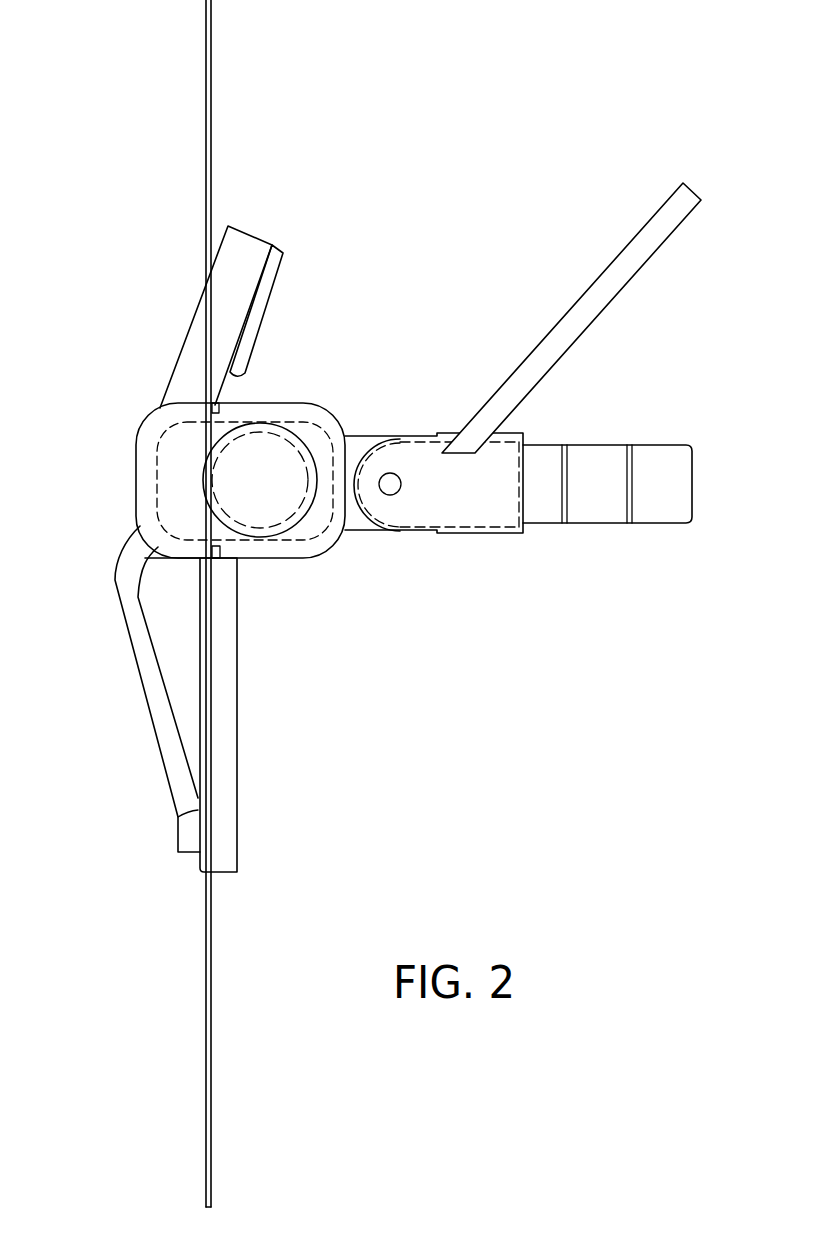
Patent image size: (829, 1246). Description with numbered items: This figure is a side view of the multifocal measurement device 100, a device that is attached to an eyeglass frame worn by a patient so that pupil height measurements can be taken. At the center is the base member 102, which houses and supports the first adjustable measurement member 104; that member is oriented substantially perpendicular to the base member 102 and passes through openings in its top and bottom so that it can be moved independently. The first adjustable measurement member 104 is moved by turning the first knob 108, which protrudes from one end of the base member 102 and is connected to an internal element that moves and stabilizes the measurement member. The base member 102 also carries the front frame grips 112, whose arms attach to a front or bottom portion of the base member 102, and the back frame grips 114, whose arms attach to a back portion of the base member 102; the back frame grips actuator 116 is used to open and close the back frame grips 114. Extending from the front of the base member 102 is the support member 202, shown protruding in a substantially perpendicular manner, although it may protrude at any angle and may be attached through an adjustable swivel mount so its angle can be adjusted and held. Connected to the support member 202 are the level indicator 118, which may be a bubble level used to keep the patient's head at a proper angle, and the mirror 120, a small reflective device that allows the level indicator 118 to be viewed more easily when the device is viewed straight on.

The multifocal measurement device 100 is at (91, 83).
The base member 102 is at (318, 542).
The first adjustable measurement member 104 is at (212, 47).
The first knob 108 is at (303, 440).
The front frame grips 112 is at (223, 782).
The back frame grips 114 is at (160, 737).
The back frame grips actuator 116 is at (197, 317).
The level indicator 118 is at (650, 457).
The mirror 120 is at (625, 245).
The support member 202 is at (488, 533).